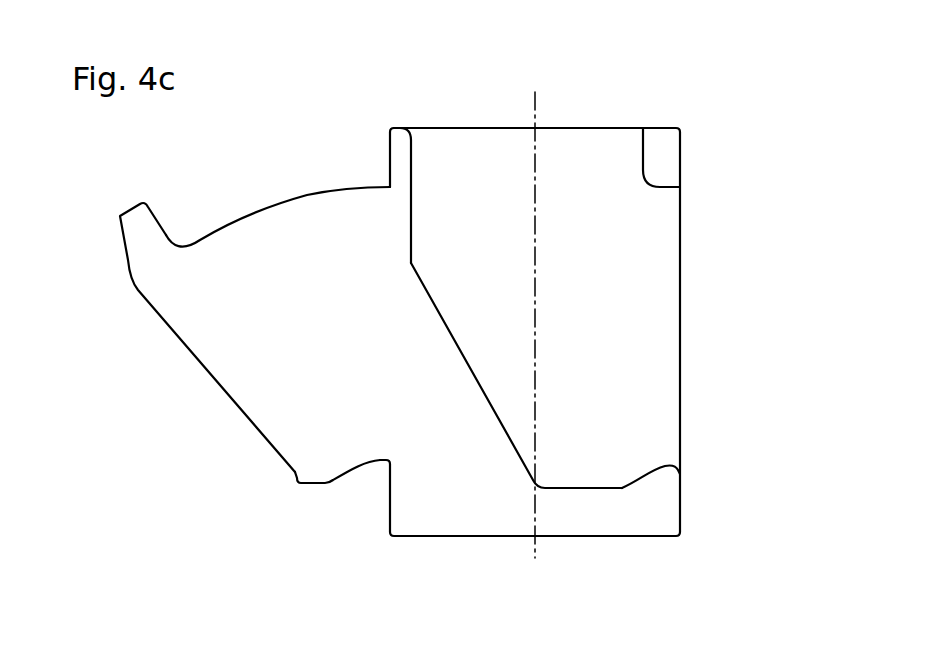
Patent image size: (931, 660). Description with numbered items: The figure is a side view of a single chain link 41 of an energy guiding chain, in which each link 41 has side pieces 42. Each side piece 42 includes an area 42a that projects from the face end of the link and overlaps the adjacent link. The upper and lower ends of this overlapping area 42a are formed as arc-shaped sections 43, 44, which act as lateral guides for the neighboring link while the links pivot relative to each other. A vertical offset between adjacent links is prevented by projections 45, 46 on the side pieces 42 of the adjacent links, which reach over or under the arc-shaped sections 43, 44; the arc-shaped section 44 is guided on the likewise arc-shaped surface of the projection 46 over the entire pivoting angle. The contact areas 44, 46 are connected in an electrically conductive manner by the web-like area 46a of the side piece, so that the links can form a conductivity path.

The chain link 41 is at (712, 270).
The side piece 42 is at (477, 182).
The overlapping area 42a is at (263, 397).
The arc-shaped section 43 is at (283, 188).
The arc-shaped section 44 is at (348, 480).
The projection 45 is at (672, 157).
The projection 46 is at (662, 477).
The web-like area 46a is at (495, 507).